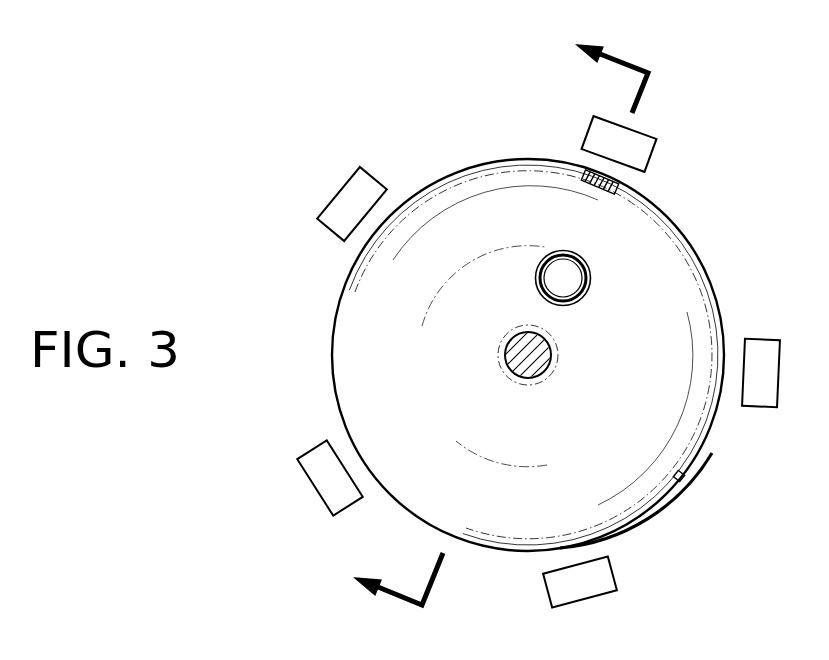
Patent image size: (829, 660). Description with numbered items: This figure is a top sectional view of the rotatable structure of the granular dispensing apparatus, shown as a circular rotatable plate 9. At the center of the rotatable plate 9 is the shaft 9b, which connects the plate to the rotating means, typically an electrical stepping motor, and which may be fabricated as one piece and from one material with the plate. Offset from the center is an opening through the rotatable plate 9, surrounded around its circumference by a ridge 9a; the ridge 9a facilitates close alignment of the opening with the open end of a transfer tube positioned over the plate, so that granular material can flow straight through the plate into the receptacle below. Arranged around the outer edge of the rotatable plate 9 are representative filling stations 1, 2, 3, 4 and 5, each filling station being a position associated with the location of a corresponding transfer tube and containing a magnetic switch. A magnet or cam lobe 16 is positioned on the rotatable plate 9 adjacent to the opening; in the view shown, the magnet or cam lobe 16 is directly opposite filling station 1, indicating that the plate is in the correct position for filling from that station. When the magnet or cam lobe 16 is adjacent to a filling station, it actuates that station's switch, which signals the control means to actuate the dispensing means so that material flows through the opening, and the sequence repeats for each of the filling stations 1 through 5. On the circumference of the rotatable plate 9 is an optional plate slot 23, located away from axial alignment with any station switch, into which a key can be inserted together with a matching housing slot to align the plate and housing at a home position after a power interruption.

The rotatable plate 9 is at (642, 230).
The ridge 9a is at (545, 255).
The shaft 9b is at (505, 362).
The magnet or cam lobe 16 is at (583, 172).
The plate slot 23 is at (686, 480).
The filling station 1 is at (619, 144).
The filling station 2 is at (761, 373).
The filling station 3 is at (580, 581).
The filling station 4 is at (472, 317).
The filling station 5 is at (352, 204).